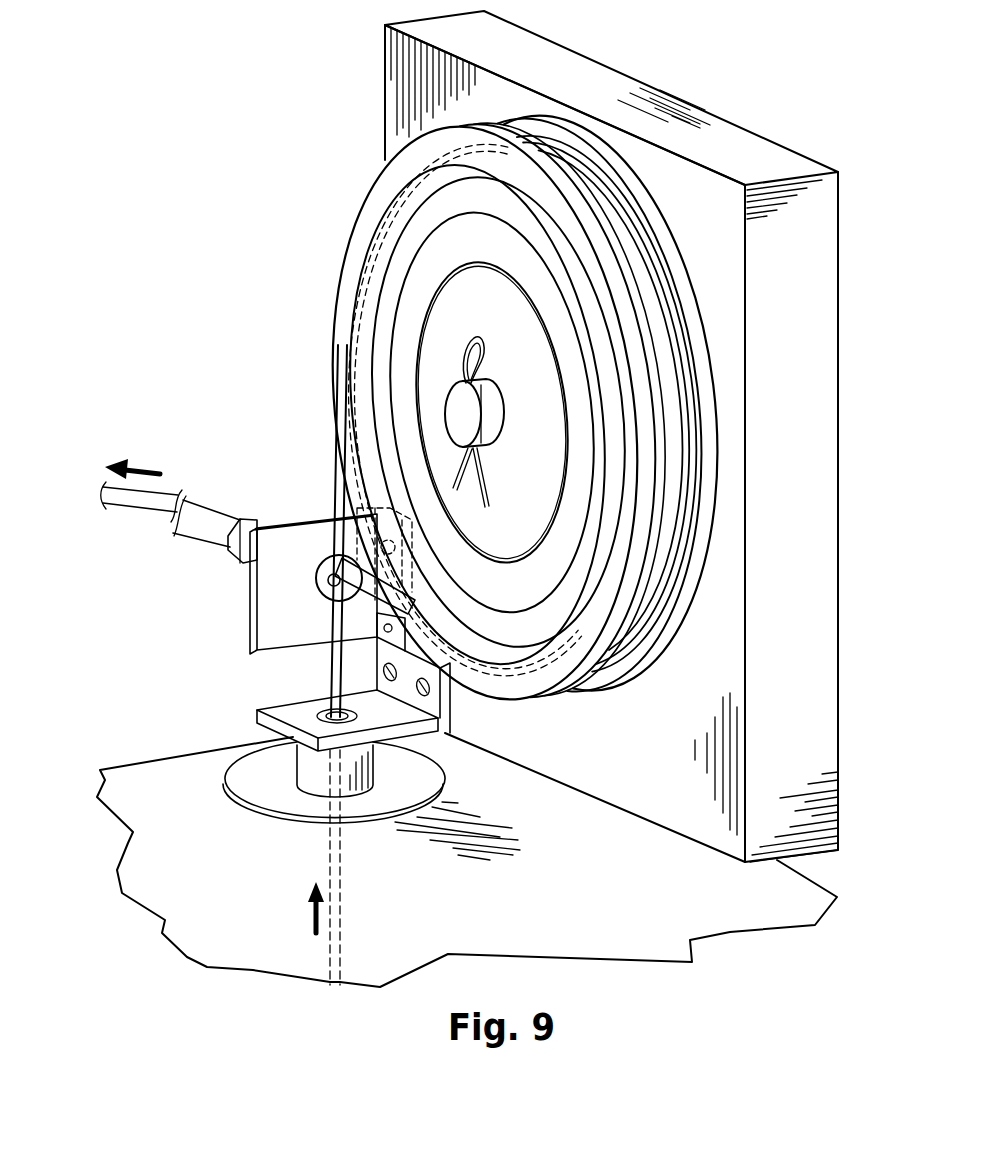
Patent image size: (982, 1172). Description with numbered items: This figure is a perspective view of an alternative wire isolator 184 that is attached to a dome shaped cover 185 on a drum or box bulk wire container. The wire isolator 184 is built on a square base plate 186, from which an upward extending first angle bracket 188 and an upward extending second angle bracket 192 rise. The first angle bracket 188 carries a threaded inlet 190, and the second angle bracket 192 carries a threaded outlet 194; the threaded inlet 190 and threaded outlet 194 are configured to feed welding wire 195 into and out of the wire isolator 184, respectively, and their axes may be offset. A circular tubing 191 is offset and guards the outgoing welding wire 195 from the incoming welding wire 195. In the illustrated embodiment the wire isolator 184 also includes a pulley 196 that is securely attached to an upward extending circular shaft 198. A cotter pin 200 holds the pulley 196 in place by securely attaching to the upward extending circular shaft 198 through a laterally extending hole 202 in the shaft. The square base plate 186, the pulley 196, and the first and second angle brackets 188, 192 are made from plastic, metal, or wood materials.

The wire isolator 184 is at (232, 182).
The dome shaped cover 185 is at (160, 785).
The square base plate 186 is at (583, 84).
The upward extending first angle bracket 188 is at (392, 716).
The threaded inlet 190 is at (297, 717).
The circular tubing 191 is at (376, 600).
The upward extending second angle bracket 192 is at (275, 612).
The threaded outlet 194 is at (328, 568).
The welding wire 195 is at (645, 358).
The pulley 196 is at (377, 190).
The upward extending circular shaft 198 is at (455, 413).
The cotter pin 200 is at (470, 340).
The laterally extending hole 202 is at (495, 413).